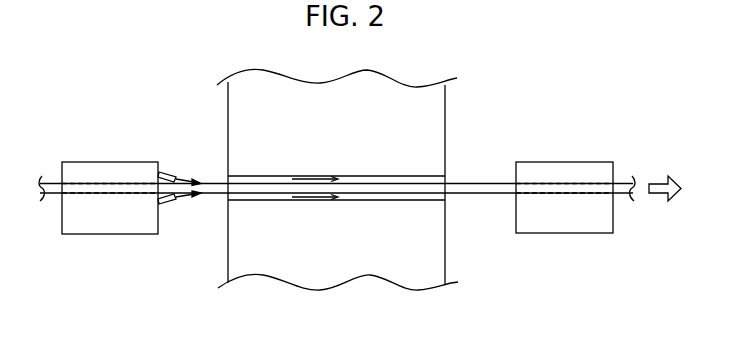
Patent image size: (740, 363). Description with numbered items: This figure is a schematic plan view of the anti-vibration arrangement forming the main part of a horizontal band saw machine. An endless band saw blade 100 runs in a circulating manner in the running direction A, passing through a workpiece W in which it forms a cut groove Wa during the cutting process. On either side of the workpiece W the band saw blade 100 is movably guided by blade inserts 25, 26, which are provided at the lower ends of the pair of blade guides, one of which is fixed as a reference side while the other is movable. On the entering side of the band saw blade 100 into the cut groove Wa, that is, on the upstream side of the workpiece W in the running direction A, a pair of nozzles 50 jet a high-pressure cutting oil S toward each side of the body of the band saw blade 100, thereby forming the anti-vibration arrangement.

The blade insert 25 is at (115, 160).
The blade insert 26 is at (569, 160).
The nozzle 50 is at (168, 170).
The high-pressure cutting oil S is at (188, 178).
The workpiece W is at (446, 102).
The cut groove Wa is at (413, 176).
The band saw blade 100 is at (479, 196).
The running direction A is at (660, 198).